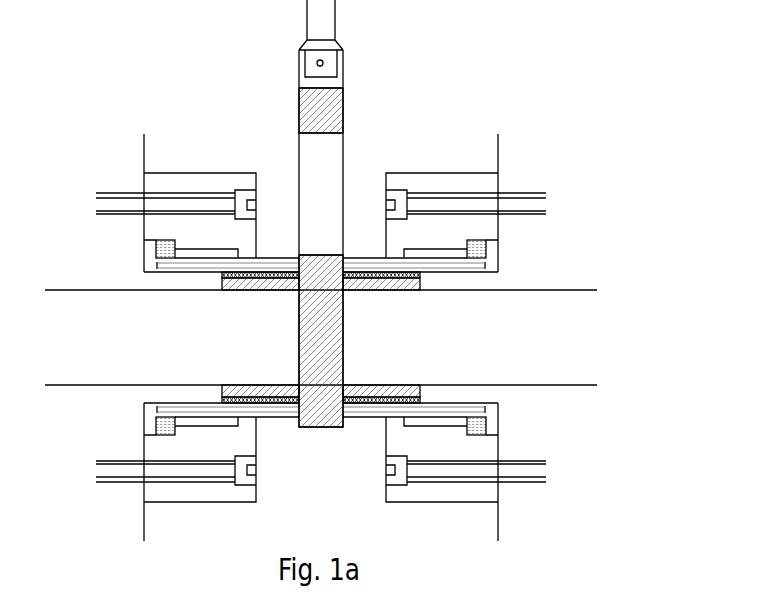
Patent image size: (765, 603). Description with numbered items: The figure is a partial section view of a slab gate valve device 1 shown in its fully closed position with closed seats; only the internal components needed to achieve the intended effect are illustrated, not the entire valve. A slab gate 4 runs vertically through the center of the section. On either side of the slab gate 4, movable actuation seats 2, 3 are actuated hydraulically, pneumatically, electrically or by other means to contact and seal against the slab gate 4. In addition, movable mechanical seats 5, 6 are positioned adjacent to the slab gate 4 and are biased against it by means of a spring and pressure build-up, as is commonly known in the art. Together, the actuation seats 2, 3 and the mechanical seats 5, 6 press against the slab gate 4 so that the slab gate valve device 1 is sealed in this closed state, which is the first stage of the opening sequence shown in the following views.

The slab gate valve device 1 is at (176, 105).
The movable actuation seat 2 is at (487, 255).
The movable actuation seat 3 is at (156, 254).
The slab gate 4 is at (343, 107).
The movable mechanical seat 5 is at (416, 280).
The movable mechanical seat 6 is at (224, 280).